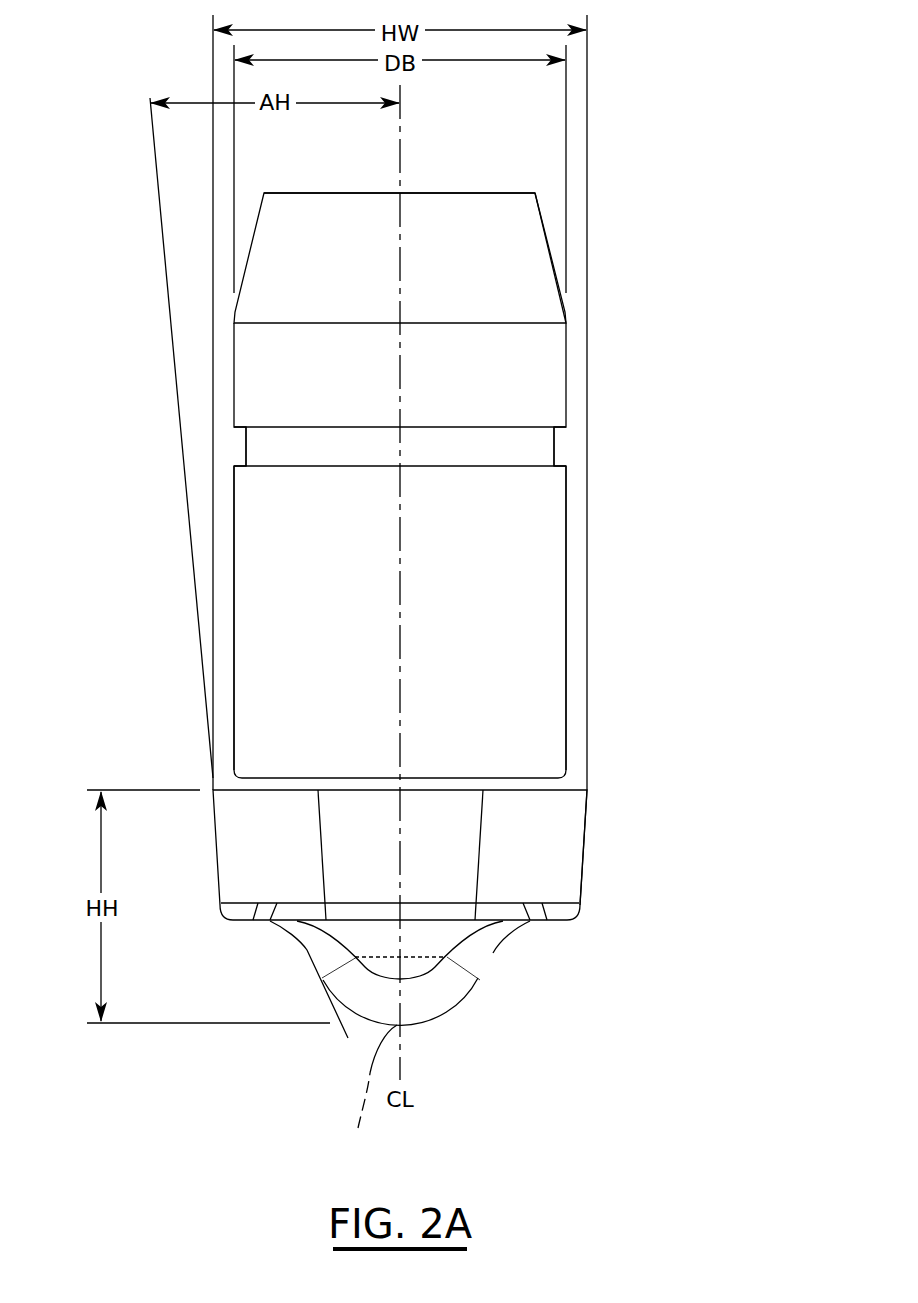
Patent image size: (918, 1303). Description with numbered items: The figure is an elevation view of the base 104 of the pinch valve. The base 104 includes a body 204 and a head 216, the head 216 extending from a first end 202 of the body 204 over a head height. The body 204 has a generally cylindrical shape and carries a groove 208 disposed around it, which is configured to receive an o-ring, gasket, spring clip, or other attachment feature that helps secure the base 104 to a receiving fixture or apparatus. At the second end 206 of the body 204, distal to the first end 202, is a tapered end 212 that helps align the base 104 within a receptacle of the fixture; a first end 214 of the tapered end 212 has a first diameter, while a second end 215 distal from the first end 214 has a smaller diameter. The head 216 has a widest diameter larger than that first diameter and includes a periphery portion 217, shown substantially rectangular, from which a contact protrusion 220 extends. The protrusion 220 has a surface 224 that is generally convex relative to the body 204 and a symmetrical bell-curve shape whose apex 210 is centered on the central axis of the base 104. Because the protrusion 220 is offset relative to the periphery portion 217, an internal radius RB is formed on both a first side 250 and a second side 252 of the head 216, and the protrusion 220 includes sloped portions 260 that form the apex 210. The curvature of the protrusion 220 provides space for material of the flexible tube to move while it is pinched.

The base 104 is at (649, 147).
The first end 202 is at (152, 747).
The body 204 is at (566, 599).
The second end 206 is at (137, 222).
The groove 208 is at (555, 447).
The apex 210 is at (358, 1128).
The tapered end 212 is at (553, 260).
The first end of tapered end 214 is at (565, 303).
The second end of tapered end 215 is at (537, 200).
The head 216 is at (603, 881).
The periphery portion 217 is at (562, 832).
The protrusion 220 is at (428, 1044).
The surface 224 is at (366, 1020).
The first side 250 is at (306, 949).
The second side 252 is at (493, 950).
The sloped portion 260 is at (486, 974).
The internal radius RB is at (508, 934).